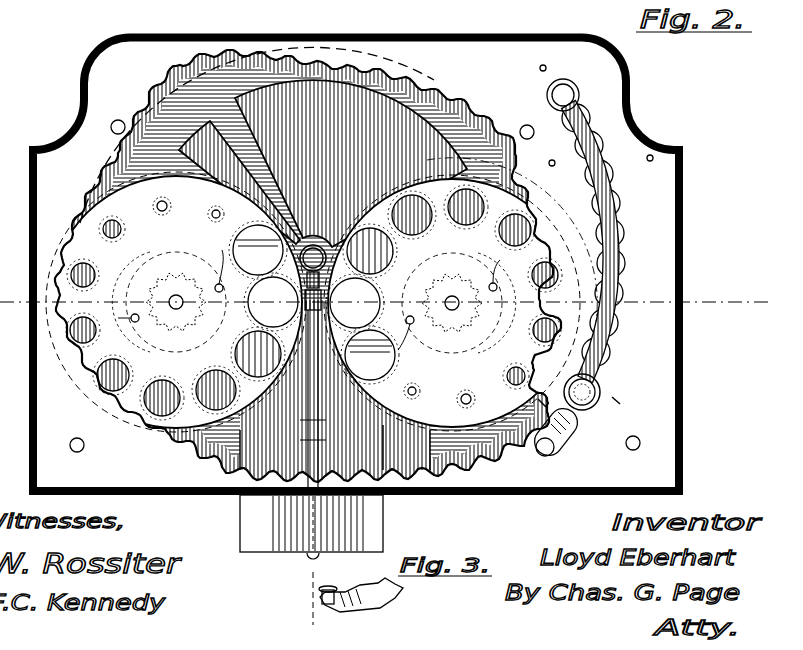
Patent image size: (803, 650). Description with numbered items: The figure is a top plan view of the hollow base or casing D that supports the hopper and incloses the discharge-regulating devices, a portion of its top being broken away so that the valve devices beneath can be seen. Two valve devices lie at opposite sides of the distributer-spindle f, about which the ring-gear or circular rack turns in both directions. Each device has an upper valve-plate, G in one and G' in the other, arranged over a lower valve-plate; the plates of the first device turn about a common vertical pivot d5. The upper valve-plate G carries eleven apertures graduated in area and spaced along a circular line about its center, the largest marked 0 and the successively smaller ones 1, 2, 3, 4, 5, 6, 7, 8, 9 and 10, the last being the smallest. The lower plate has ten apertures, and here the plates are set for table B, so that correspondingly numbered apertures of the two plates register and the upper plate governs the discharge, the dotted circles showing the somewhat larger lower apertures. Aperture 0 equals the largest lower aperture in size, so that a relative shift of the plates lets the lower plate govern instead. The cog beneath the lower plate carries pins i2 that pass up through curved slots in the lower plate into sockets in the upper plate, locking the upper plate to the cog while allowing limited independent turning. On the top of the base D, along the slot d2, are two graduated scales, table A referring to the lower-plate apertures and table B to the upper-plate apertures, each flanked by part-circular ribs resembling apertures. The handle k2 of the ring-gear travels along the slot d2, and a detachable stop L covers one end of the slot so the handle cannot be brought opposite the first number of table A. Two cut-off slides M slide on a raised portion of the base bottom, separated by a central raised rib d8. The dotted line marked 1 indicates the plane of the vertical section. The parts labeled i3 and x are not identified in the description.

In FIG. 2, the base or casing D is at (356, 265).
In FIG. 2, the table B is at (313, 264).
In FIG. 2, the aperture No. 1 is at (385, 302).
In FIG. 2, the upper valve-plate G' is at (176, 302).
In FIG. 2, the upper valve-plate G is at (460, 294).
In FIG. 2, the aperture 0 is at (312, 307).
In FIG. 2, the aperture No. 2 is at (307, 302).
In FIG. 2, the aperture No. 3 is at (314, 324).
In FIG. 2, the aperture No. 4 is at (314, 300).
In FIG. 2, the aperture No. 5 is at (314, 298).
In FIG. 2, the aperture No. 6 is at (314, 297).
In FIG. 2, the aperture No. 7 is at (314, 302).
In FIG. 2, the aperture No. 8 is at (310, 302).
In FIG. 2, the aperture No. 9 is at (321, 301).
In FIG. 2, the aperture No. 10 is at (321, 303).
In FIG. 2, the pins i2 is at (314, 295).
In FIG. 2, the pawl guide i3 is at (309, 302).
In FIG. 2, the distributer-spindle f is at (313, 369).
In FIG. 2, the raised rib d8 is at (319, 412).
In FIG. 2, the slot d2 is at (597, 140).
In FIG. 2, the pivot d5 is at (565, 86).
In FIG. 2, the handle k2 is at (600, 392).
In FIG. 2, the stop L is at (568, 440).
In FIG. 3, the stop L is at (368, 600).
In FIG. 2, the table A is at (598, 240).
In FIG. 2, the cut-off slides M is at (400, 520).
In FIG. 2, the shaft end x is at (309, 564).